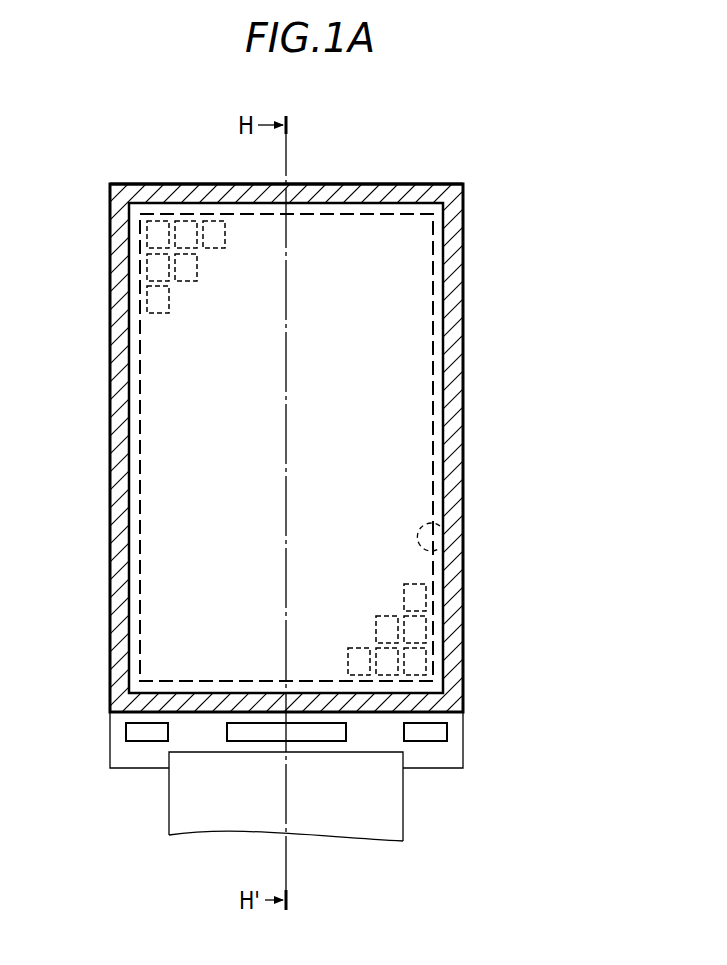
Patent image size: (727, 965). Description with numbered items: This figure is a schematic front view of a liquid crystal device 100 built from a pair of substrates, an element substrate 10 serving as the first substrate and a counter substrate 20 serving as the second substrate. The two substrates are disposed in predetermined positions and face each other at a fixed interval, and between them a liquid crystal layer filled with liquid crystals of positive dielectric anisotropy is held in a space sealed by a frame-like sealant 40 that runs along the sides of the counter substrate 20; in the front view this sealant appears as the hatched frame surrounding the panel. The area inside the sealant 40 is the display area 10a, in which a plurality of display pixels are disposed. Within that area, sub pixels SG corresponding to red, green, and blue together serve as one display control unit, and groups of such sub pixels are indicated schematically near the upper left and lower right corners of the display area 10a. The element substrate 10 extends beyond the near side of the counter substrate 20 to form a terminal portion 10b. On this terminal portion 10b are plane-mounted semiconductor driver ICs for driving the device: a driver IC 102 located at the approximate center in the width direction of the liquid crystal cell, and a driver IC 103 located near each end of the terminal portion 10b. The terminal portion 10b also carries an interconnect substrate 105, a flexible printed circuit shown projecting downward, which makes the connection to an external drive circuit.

The liquid crystal device 100 is at (500, 150).
The element substrate 10 is at (286, 448).
The counter substrate 20 is at (463, 306).
The sealant 40 is at (453, 423).
The display area 10a is at (432, 550).
The terminal portion 10b is at (447, 752).
The driver IC 102 is at (330, 742).
The driver IC 103 is at (138, 735).
The interconnect substrate 105 is at (385, 806).
The sub pixels SG is at (214, 249).